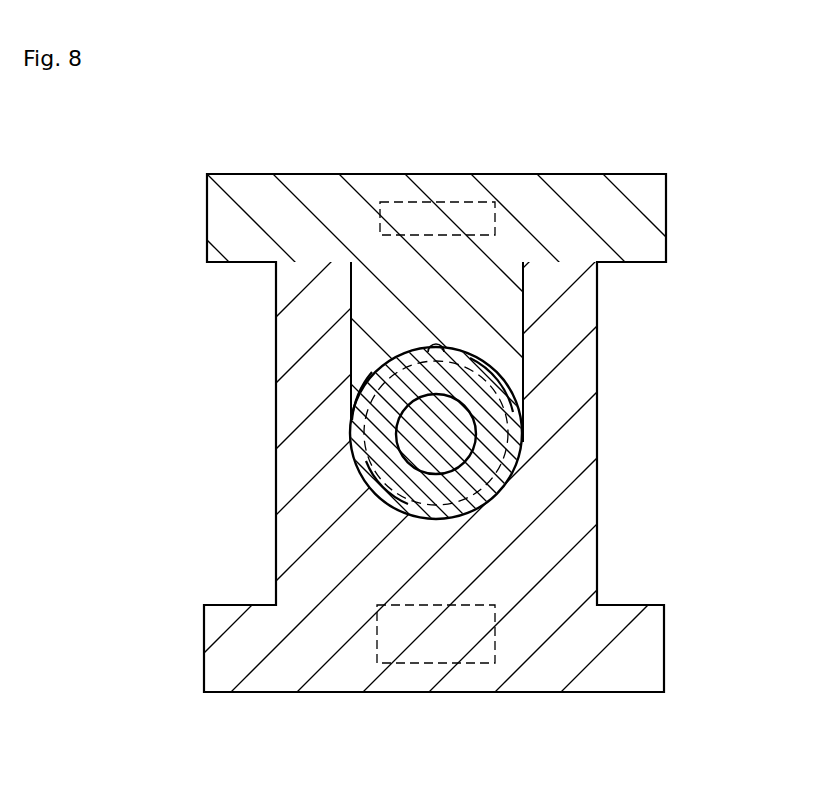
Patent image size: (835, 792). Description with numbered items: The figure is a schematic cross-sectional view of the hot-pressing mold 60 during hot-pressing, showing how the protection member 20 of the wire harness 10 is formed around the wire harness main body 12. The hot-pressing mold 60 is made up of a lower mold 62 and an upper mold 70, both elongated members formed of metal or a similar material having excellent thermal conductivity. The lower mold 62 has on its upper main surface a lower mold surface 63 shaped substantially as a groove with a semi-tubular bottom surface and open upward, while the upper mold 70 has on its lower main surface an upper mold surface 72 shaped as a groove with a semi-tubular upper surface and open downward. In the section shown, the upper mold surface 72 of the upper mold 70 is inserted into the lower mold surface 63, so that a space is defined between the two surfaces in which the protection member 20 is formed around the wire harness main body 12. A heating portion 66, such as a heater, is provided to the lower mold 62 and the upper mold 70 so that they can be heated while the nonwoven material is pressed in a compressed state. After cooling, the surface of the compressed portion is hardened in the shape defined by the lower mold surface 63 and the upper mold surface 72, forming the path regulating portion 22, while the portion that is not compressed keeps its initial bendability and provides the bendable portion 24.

The wire harness 10 is at (516, 467).
The wire harness main body 12 is at (478, 434).
The protection member 20 is at (495, 365).
The path regulating portion 22 is at (360, 387).
The bendable portion 24 is at (368, 470).
The hot-pressing mold 60 is at (479, 163).
The lower mold 62 is at (664, 642).
The lower mold surface 63 is at (490, 488).
The heating portion 66 is at (445, 200).
The upper mold 70 is at (666, 218).
The upper mold surface 72 is at (445, 351).